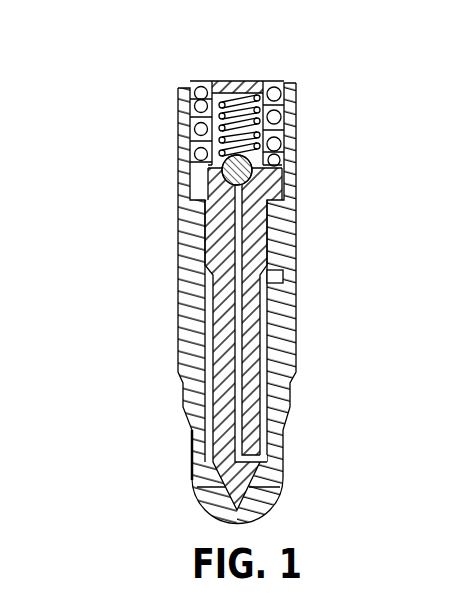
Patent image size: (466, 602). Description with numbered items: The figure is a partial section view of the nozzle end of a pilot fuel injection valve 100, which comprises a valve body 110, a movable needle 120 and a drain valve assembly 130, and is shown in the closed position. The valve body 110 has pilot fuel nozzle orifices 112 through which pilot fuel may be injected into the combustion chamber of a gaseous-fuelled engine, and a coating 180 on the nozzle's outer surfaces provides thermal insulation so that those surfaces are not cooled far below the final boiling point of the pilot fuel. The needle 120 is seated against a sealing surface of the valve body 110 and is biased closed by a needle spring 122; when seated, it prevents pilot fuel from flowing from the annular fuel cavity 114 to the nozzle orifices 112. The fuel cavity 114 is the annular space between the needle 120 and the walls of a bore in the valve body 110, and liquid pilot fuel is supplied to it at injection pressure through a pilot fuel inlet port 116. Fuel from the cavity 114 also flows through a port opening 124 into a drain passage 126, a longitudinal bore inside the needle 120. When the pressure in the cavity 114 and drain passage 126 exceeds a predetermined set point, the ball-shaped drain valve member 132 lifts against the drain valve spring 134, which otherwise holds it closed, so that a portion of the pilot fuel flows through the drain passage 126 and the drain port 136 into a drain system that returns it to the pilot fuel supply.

The pilot fuel injection valve 100 is at (157, 66).
The valve body 110 is at (192, 242).
The pilot fuel nozzle orifices 112 is at (192, 478).
The annular fuel cavity 114 is at (213, 390).
The pilot fuel inlet port 116 is at (285, 277).
The movable needle 120 is at (213, 323).
The needle spring 122 is at (193, 148).
The port opening 124 is at (260, 443).
The drain passage 126 is at (237, 358).
The drain valve assembly 130 is at (304, 73).
The drain valve member 132 is at (286, 160).
The drain valve spring 134 is at (290, 94).
The drain port 136 is at (287, 121).
The coating 180 is at (192, 447).